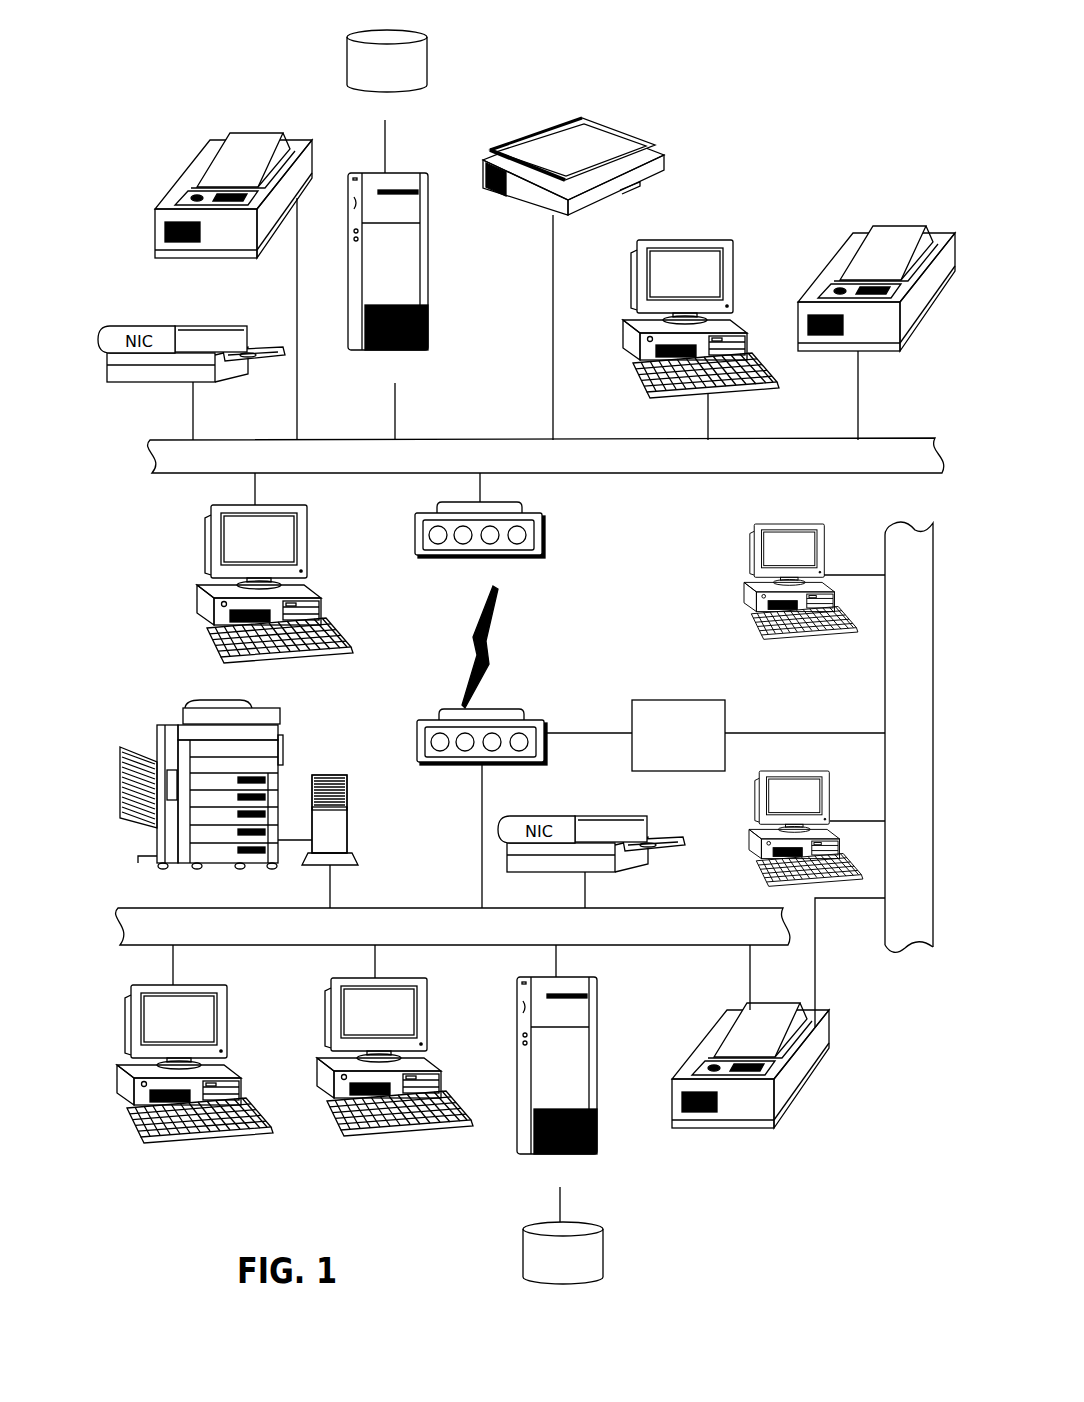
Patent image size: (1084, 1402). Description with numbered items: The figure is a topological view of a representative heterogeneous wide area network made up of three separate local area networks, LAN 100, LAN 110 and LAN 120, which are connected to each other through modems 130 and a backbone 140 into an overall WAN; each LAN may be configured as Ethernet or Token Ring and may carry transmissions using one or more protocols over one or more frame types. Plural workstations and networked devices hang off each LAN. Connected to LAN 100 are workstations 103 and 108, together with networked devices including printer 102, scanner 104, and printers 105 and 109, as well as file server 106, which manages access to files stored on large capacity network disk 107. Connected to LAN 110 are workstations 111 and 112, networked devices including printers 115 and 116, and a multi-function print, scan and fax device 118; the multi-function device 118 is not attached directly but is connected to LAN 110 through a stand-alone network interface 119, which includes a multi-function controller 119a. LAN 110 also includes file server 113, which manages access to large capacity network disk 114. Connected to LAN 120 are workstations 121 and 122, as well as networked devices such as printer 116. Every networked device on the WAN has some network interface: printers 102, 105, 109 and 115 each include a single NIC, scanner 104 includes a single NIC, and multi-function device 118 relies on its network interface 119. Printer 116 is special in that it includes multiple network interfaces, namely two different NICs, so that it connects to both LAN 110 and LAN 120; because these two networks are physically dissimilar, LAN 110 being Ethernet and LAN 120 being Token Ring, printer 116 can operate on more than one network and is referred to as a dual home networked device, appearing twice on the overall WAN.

The local area network 100 is at (470, 438).
The printer 102 is at (152, 326).
The workstation 103 is at (212, 558).
The scanner 104 is at (663, 158).
The printer 105 is at (218, 148).
The file server 106 is at (430, 257).
The network disk 107 is at (347, 70).
The workstation 108 is at (733, 286).
The printer 109 is at (907, 224).
The local area network 110 is at (412, 908).
The workstation 111 is at (190, 1133).
The workstation 112 is at (357, 1128).
The file server 113 is at (517, 1050).
The network disk 114 is at (523, 1258).
The printer 115 is at (630, 815).
The printer 116 is at (733, 1128).
The multi-function device 118 is at (233, 866).
The network interface 119 is at (338, 758).
The multi-function controller 119a is at (348, 823).
The local area network 120 is at (885, 685).
The workstation 121 is at (779, 524).
The workstation 122 is at (749, 834).
The modem 130 is at (542, 530).
The backbone 140 is at (671, 700).